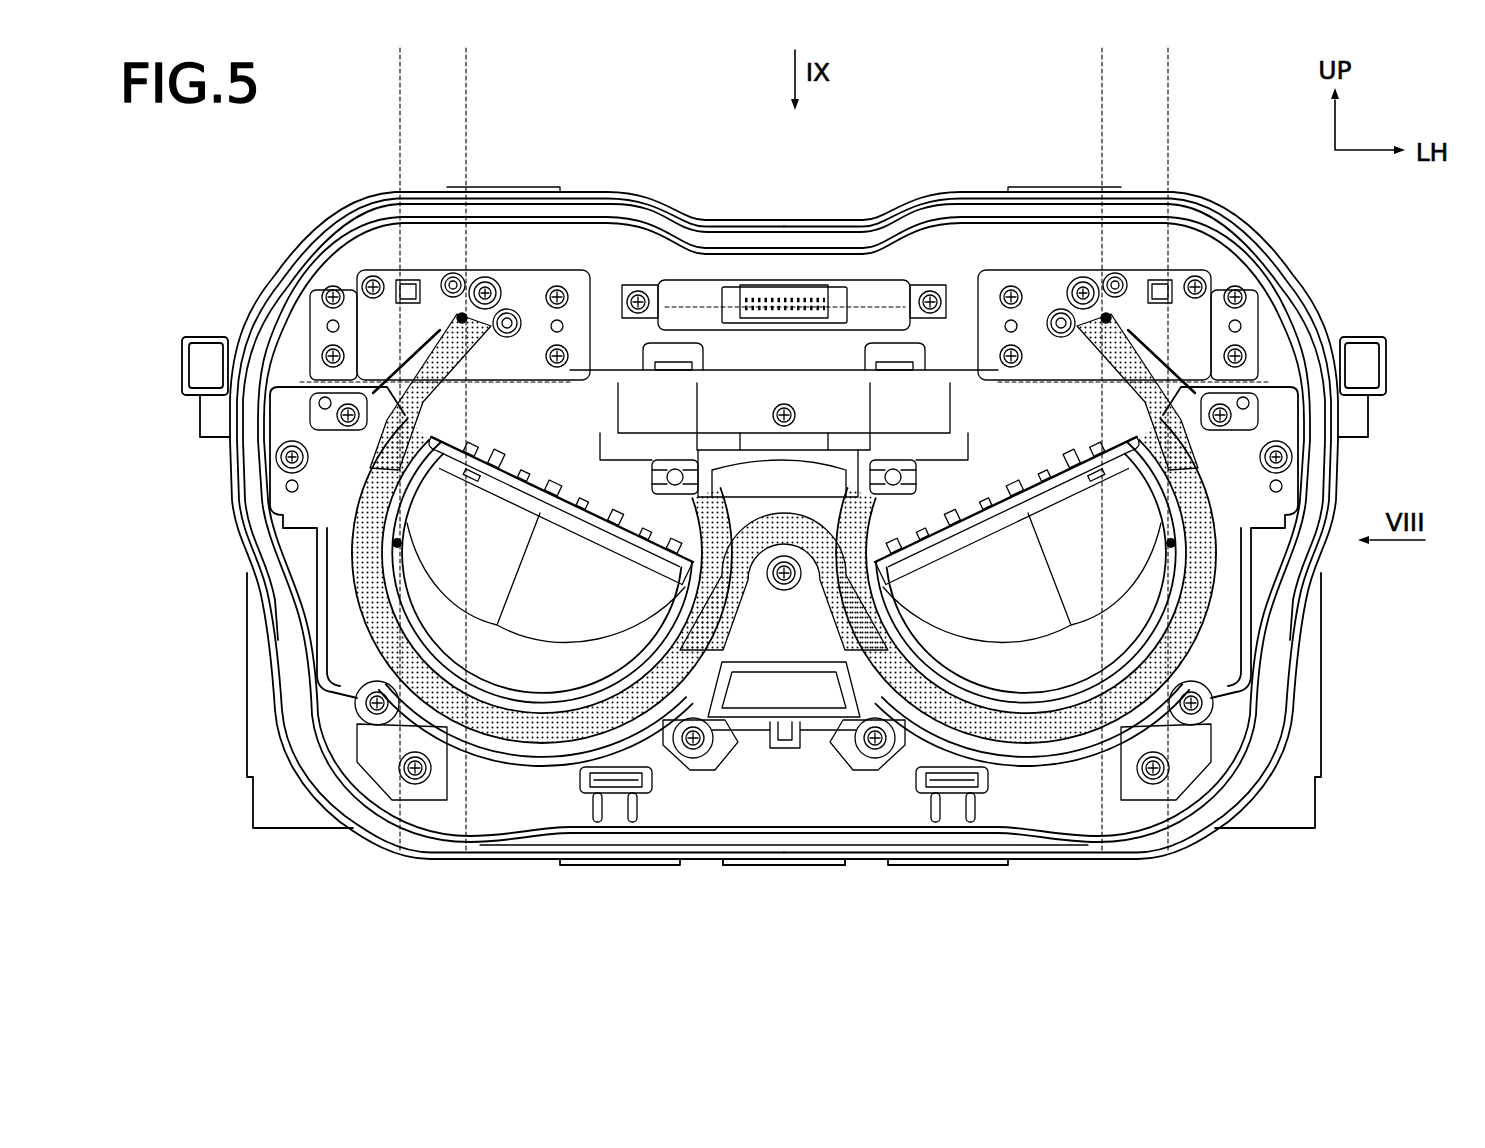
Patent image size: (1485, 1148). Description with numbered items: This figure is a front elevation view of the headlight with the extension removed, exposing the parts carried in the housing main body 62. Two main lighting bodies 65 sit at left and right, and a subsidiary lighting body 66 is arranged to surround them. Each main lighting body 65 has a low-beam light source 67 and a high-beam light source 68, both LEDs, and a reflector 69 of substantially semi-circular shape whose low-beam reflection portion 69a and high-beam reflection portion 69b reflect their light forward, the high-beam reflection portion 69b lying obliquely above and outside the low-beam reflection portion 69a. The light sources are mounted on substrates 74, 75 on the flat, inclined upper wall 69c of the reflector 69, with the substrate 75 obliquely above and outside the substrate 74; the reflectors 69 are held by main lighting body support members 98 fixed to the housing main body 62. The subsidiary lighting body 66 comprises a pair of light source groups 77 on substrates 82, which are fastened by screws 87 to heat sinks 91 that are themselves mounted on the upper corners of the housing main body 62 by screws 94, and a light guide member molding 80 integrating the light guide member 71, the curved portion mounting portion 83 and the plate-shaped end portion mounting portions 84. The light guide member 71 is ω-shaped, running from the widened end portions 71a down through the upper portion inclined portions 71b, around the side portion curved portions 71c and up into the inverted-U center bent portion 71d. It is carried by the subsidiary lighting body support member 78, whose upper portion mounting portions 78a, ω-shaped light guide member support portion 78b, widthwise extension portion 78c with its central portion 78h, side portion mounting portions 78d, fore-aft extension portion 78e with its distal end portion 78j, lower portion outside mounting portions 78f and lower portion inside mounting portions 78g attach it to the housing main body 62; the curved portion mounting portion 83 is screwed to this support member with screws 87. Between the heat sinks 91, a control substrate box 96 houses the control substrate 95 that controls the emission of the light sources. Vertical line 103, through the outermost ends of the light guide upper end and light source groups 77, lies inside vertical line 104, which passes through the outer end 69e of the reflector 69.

The housing main body 62 is at (275, 278).
The main lighting body 65 is at (400, 560).
The subsidiary lighting body 66 is at (751, 748).
The low-beam light source 67 is at (633, 765).
The high-beam light source 68 is at (300, 465).
The reflector 69 is at (545, 645).
The low-beam reflection portion 69a is at (588, 630).
The high-beam reflection portion 69b is at (385, 605).
The upper wall 69c is at (598, 500).
The outer end 69e is at (393, 541).
The light guide member 71 is at (931, 705).
The end portion 71a is at (498, 310).
The upper portion inclined portion 71b is at (357, 397).
The side portion curved portion 71c is at (355, 702).
The center bent portion 71d is at (762, 378).
The substrate 74 is at (658, 458).
The substrate 75 is at (510, 308).
The light source group 77 is at (425, 278).
The subsidiary lighting body support member 78 is at (712, 380).
The upper portion mounting portion 78a is at (545, 300).
The light guide member support portion 78b is at (1100, 790).
The widthwise extension portion 78c is at (850, 365).
The side portion mounting portion 78d is at (288, 398).
The fore-aft extension portion 78e is at (700, 341).
The lower portion outside mounting portion 78f is at (387, 757).
The lower portion inside mounting portion 78g is at (712, 797).
The central portion 78h is at (833, 395).
The distal end portion 78j is at (680, 760).
The light guide member molding 80 is at (808, 750).
The substrate 82 is at (380, 317).
The curved portion mounting portion 83 is at (1300, 600).
The end portion mounting portion 84 is at (452, 273).
The screw 87 is at (475, 277).
The heat sink 91 is at (300, 262).
The screw 94 is at (335, 288).
The control substrate 95 is at (713, 358).
The control substrate box 96 is at (862, 278).
The main lighting body support member 98 is at (662, 330).
The vertical line 103 is at (466, 70).
The vertical line 104 is at (404, 70).